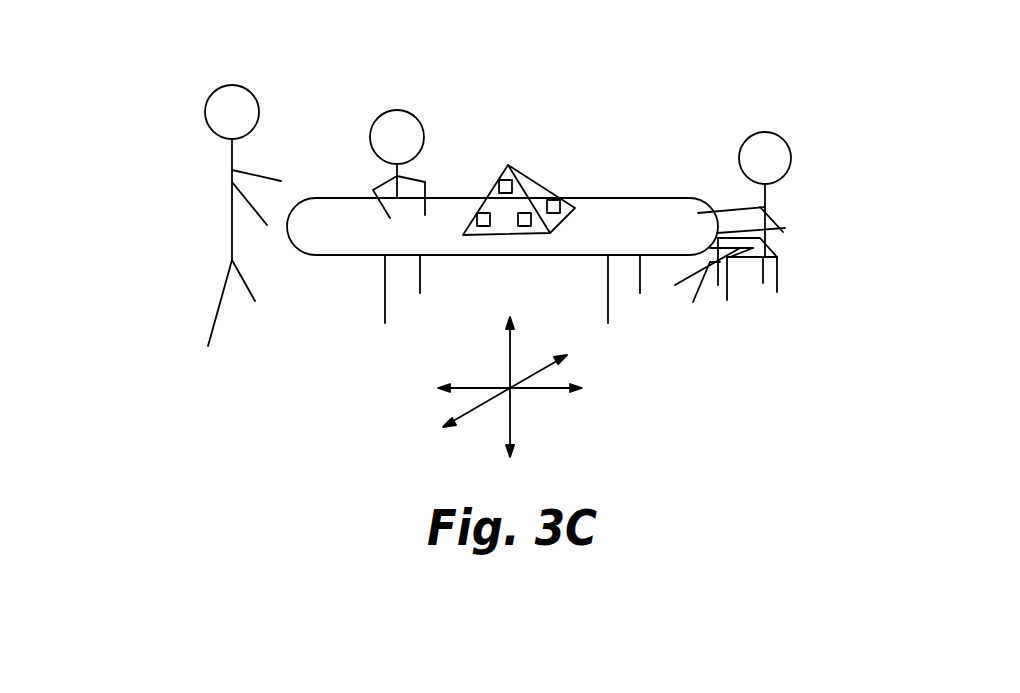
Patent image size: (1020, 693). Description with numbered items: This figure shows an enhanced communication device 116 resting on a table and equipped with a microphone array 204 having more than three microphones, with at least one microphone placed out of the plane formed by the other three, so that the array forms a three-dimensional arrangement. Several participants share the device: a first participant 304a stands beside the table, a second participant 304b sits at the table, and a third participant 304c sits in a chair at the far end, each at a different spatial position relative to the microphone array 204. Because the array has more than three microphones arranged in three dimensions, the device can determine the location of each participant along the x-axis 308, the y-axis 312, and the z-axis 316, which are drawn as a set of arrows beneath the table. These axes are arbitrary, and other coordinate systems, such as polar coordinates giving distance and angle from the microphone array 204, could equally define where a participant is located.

The enhanced communication device 116 is at (525, 176).
The microphone array 204 is at (475, 220).
The first participant 304a is at (205, 112).
The second participant 304b is at (395, 110).
The third participant 304c is at (827, 150).
The x-axis 308 is at (562, 382).
The y-axis 312 is at (463, 413).
The z-axis 316 is at (509, 350).